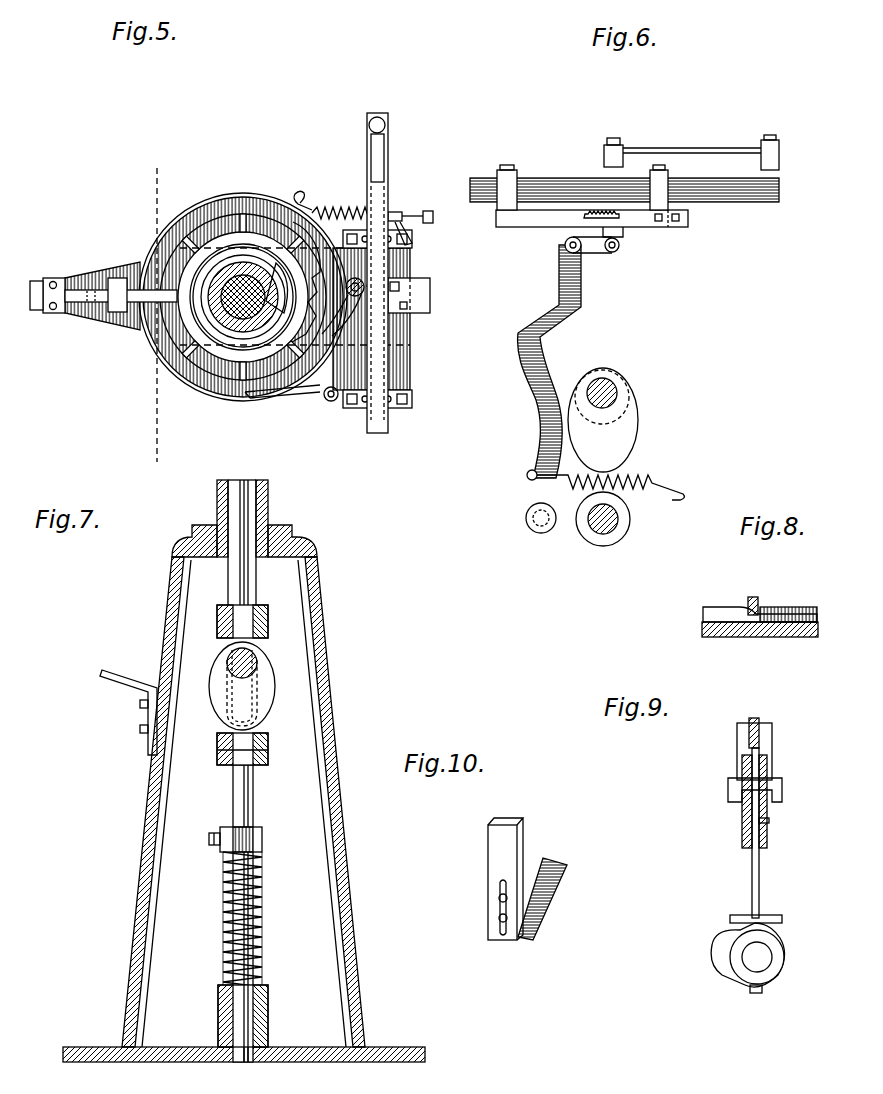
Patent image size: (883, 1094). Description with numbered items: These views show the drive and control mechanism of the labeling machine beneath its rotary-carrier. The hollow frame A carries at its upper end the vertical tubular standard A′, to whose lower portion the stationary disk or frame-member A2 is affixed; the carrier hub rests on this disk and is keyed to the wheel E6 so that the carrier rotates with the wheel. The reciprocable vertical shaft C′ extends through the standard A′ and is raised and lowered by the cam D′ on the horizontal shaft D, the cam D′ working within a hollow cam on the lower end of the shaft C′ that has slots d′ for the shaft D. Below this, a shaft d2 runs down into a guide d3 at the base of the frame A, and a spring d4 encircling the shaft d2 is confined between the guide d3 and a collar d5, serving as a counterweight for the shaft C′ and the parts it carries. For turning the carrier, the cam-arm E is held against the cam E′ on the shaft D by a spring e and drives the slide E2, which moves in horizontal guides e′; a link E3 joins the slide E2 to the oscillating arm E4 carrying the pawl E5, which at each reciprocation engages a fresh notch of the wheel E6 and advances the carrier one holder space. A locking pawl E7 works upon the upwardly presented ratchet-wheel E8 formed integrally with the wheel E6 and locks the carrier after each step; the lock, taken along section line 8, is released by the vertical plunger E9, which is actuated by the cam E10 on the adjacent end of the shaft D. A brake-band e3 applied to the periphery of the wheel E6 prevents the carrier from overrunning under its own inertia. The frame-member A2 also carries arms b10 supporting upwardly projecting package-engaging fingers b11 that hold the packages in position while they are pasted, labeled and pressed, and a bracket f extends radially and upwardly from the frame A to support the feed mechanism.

In FIG. 5, the section line 8 is at (52, 195).
In FIG. 5, the wheel E6 is at (216, 196).
In FIG. 8, the wheel E6 is at (770, 637).
In FIG. 5, the ratchet-wheel E8 is at (268, 217).
In FIG. 8, the ratchet-wheel E8 is at (706, 616).
In FIG. 5, the locking pawl E7 is at (83, 292).
In FIG. 8, the locking pawl E7 is at (752, 598).
In FIG. 9, the locking pawl E7 is at (760, 740).
In FIG. 5, the reciprocable vertical shaft C′ is at (213, 290).
In FIG. 7, the reciprocable vertical shaft C′ is at (250, 580).
In FIG. 5, the vertical tubular standard A′ is at (205, 315).
In FIG. 7, the vertical tubular standard A′ is at (269, 486).
In FIG. 5, the stationary disk or frame-member A2 is at (88, 323).
In FIG. 9, the stationary disk or frame-member A2 is at (728, 793).
In FIG. 5, the brake-band e3 is at (262, 397).
In FIG. 5, the pawl E5 is at (345, 300).
In FIG. 5, the oscillating arm E4 is at (300, 330).
In FIG. 6, the oscillating arm E4 is at (603, 160).
In FIG. 5, the link E3 is at (378, 153).
In FIG. 6, the link E3 is at (680, 152).
In FIG. 5, the slide E2 is at (386, 195).
In FIG. 6, the slide E2 is at (723, 196).
In FIG. 6, the horizontal guides e′ is at (510, 190).
In FIG. 6, the cam-arm E is at (545, 297).
In FIG. 6, the cam E′ is at (630, 432).
In FIG. 6, the horizontal shaft D is at (612, 390).
In FIG. 7, the horizontal shaft D is at (262, 665).
In FIG. 9, the horizontal shaft D is at (760, 958).
In FIG. 6, the spring e is at (628, 487).
In FIG. 7, the hollow frame A is at (165, 605).
In FIG. 7, the bracket f is at (110, 685).
In FIG. 7, the cam D′ is at (212, 680).
In FIG. 7, the slots d′ is at (245, 706).
In FIG. 7, the shaft d2 is at (236, 805).
In FIG. 7, the collar d5 is at (263, 838).
In FIG. 7, the spring d4 is at (262, 882).
In FIG. 7, the guide d3 is at (218, 1010).
In FIG. 9, the vertical plunger E9 is at (752, 875).
In FIG. 9, the cam E10 is at (730, 962).
In FIG. 10, the package-engaging fingers b11 is at (497, 864).
In FIG. 10, the arms b10 is at (555, 884).